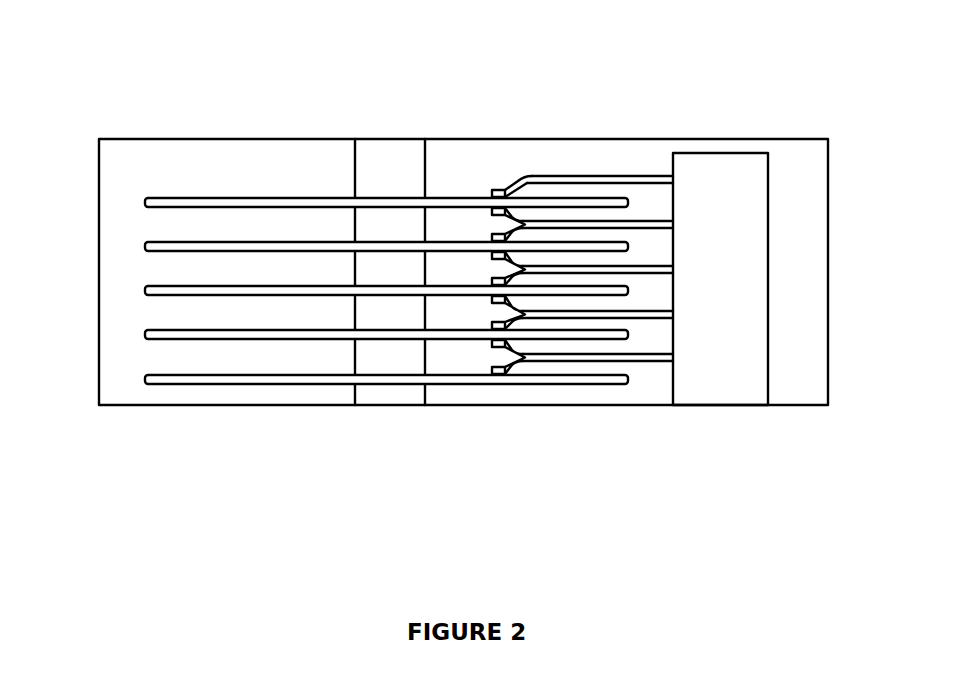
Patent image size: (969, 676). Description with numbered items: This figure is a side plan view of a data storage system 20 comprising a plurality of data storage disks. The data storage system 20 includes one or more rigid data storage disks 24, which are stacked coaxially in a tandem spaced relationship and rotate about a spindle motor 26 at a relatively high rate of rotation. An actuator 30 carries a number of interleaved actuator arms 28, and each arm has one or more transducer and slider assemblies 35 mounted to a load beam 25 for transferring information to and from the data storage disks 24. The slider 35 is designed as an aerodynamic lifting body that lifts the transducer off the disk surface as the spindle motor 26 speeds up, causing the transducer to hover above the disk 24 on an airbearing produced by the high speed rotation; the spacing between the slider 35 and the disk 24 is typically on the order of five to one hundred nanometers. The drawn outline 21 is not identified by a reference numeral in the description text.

The data storage system 20 is at (451, 240).
The substrate body 21 is at (828, 307).
The rigid data storage disks 24 is at (145, 201).
The load beam 25 is at (518, 187).
The spindle motor 26 is at (382, 405).
The actuator arms 28 is at (583, 177).
The actuator 30 is at (720, 383).
The slider 35 is at (492, 191).